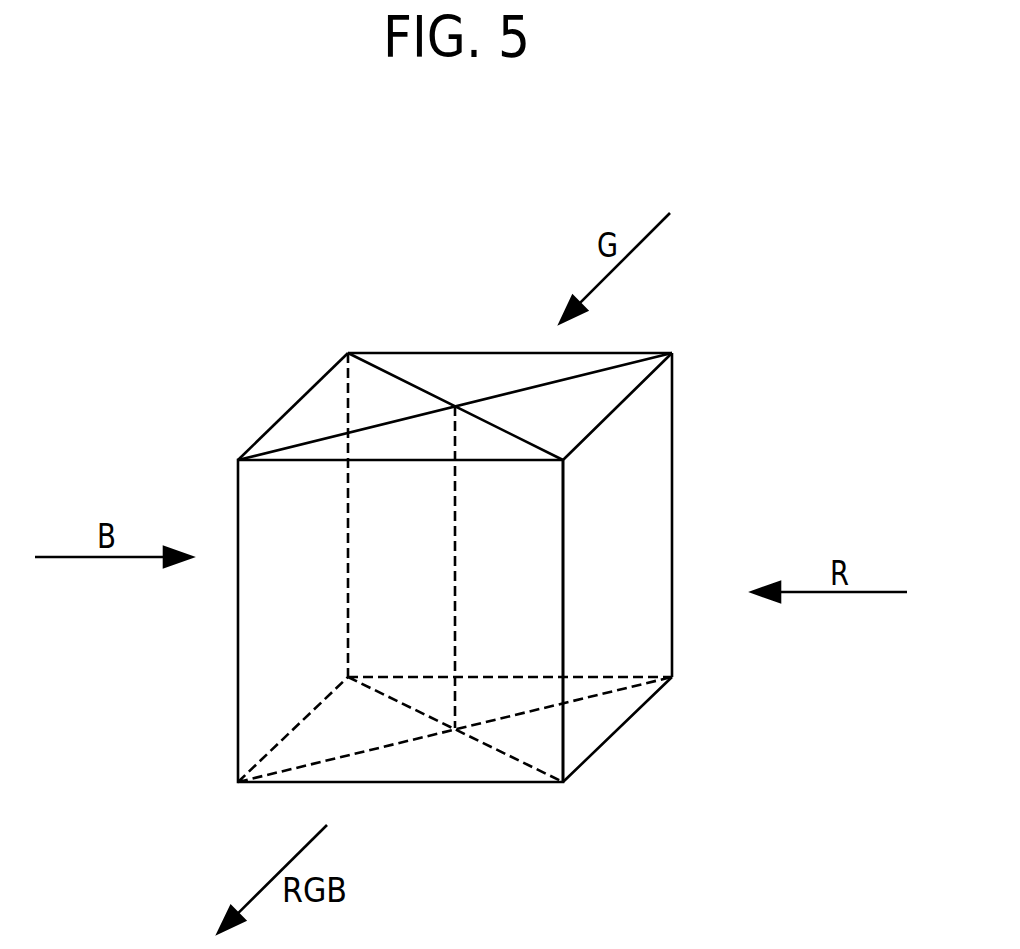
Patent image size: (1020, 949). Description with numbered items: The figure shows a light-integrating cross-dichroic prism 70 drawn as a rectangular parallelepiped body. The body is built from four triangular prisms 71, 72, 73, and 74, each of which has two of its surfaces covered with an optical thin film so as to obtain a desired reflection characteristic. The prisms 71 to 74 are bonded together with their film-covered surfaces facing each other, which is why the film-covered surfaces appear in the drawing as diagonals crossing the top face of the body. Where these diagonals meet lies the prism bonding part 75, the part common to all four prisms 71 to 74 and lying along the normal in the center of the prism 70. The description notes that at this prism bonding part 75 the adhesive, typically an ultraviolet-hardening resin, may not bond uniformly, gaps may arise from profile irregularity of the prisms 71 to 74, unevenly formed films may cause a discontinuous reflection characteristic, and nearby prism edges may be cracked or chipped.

The cross-dichroic prism 70 is at (773, 258).
The triangular prism 71 is at (300, 415).
The triangular prism 72 is at (472, 356).
The triangular prism 73 is at (648, 498).
The triangular prism 74 is at (263, 608).
The prism bonding part 75 is at (457, 405).